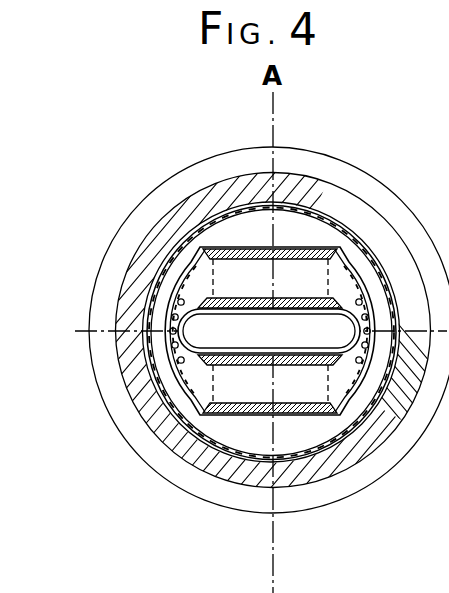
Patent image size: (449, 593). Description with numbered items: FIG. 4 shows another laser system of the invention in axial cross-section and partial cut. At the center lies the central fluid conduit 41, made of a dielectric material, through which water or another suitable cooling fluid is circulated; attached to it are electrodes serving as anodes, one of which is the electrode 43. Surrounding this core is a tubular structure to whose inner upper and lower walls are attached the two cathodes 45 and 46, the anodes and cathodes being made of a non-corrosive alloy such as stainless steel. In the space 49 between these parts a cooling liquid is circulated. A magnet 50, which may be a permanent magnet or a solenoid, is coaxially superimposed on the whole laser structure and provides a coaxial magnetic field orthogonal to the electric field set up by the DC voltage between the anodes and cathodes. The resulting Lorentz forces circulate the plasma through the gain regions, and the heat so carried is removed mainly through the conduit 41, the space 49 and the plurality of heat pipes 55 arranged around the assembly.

The magnet 50 is at (347, 170).
The space 49 is at (264, 236).
The cathode 45 is at (318, 410).
The cathode 46 is at (322, 263).
The electrode 43 is at (226, 368).
The central fluid conduit 41 is at (286, 312).
The heat pipes 55 is at (184, 300).